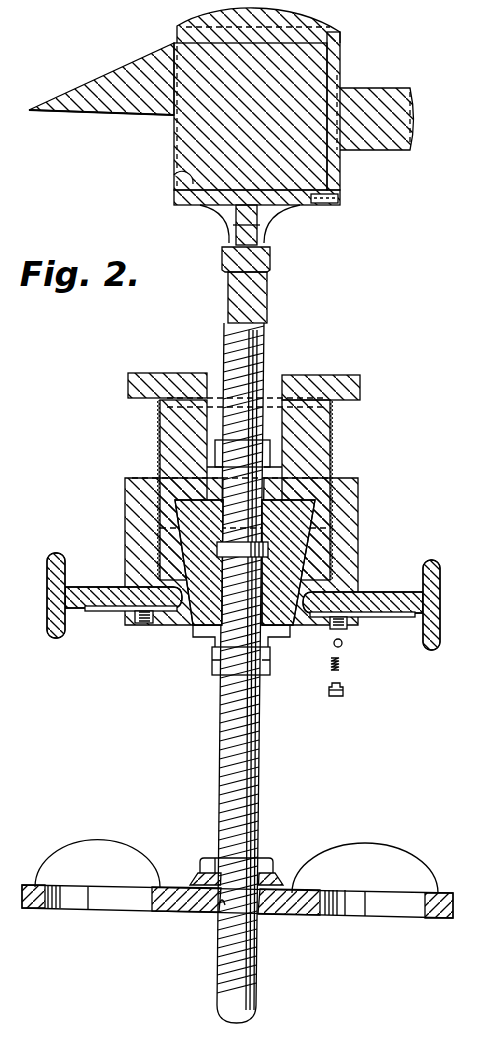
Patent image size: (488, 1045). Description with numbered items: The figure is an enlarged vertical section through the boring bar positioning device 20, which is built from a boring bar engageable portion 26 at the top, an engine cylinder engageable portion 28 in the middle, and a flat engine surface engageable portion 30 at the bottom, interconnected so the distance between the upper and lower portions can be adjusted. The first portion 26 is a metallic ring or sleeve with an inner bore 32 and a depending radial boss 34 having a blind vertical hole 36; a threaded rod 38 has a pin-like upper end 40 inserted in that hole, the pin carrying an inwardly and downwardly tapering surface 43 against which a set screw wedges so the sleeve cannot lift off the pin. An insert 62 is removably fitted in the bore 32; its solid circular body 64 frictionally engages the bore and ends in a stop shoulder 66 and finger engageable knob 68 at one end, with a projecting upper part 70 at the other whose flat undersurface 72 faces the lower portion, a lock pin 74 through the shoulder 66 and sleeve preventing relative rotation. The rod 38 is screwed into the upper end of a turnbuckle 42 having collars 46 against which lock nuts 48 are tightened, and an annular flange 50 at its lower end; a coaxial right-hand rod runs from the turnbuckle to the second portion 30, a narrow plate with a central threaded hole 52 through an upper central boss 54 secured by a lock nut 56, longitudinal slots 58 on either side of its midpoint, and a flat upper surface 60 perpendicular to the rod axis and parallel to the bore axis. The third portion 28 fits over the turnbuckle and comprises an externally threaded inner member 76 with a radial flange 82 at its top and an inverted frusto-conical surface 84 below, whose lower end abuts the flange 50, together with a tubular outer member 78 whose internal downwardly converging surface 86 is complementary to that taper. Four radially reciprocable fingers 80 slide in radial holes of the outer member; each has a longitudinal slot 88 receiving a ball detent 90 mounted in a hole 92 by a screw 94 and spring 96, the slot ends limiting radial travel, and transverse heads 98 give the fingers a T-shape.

The positioning device 20 is at (250, 515).
The boring bar engageable portion 26 is at (247, 247).
The engine cylinder engageable portion 28 is at (250, 575).
The flat engine surface engageable portion 30 is at (237, 886).
The inner bore 32 is at (183, 177).
The radial boss 34 is at (214, 224).
The blind vertical hole 36 is at (246, 225).
The threaded rod 38 is at (247, 297).
The pin-like upper end 40 is at (246, 259).
The turnbuckle 42 is at (273, 625).
The tapering surface 43 is at (282, 224).
The collars 46 is at (222, 673).
The lock nuts 48 is at (266, 695).
The annular flange 50 is at (215, 640).
The threaded hole 52 is at (225, 910).
The upper central boss 54 is at (193, 880).
The lock nut 56 is at (285, 862).
The longitudinal slots 58 is at (60, 906).
The upper surface 60 is at (76, 844).
The insert 62 is at (246, 109).
The solid circular body 64 is at (250, 116).
The stop shoulder 66 is at (333, 111).
The finger engageable knob 68 is at (377, 119).
The projecting upper part 70 is at (101, 79).
The flat undersurface 72 is at (101, 112).
The lock pin 74 is at (324, 198).
The inner member 76 is at (276, 547).
The outer member 78 is at (348, 553).
The fingers 80 is at (393, 592).
The radial flange 82 is at (360, 383).
The frusto-conical surface 84 is at (183, 628).
The internal downwardly converging surface 86 is at (150, 621).
The longitudinal slot 88 is at (118, 609).
The ball detent 90 is at (344, 643).
The hole 92 is at (138, 619).
The screw 94 is at (346, 695).
The spring 96 is at (346, 672).
The transverse heads 98 is at (55, 598).